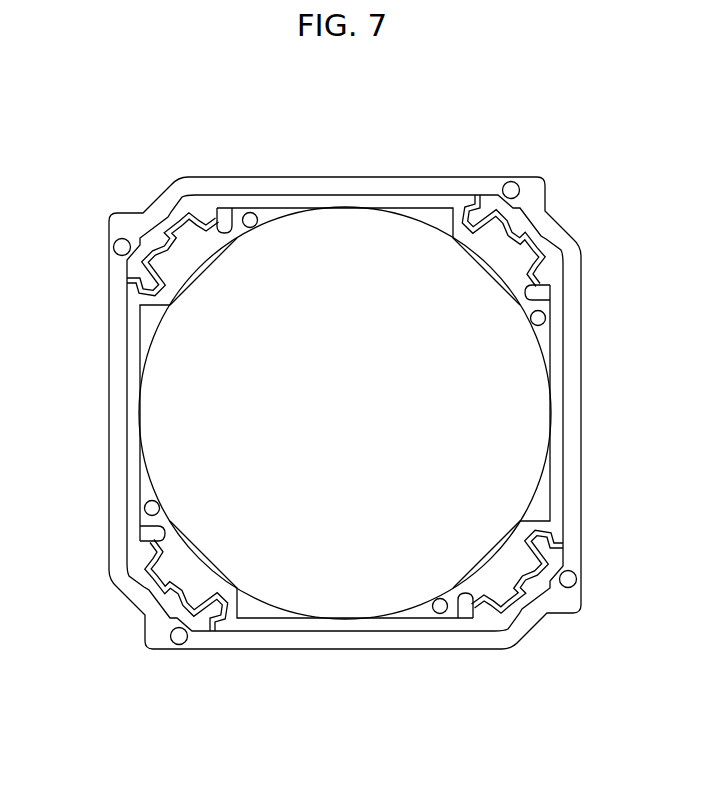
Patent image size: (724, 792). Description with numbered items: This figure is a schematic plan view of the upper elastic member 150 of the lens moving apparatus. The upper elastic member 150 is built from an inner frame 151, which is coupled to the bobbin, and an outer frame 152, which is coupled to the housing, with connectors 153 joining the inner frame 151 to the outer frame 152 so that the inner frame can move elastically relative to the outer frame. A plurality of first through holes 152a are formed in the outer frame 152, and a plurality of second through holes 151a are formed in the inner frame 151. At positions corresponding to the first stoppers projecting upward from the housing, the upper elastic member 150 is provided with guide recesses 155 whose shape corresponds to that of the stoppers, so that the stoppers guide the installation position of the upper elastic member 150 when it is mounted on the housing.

The upper elastic member 150 is at (578, 157).
The inner frame 151 is at (556, 352).
The second through holes 151a is at (252, 212).
The outer frame 152 is at (581, 320).
The first through holes 152a is at (114, 247).
The connectors 153 is at (550, 258).
The guide recesses 155 is at (550, 219).